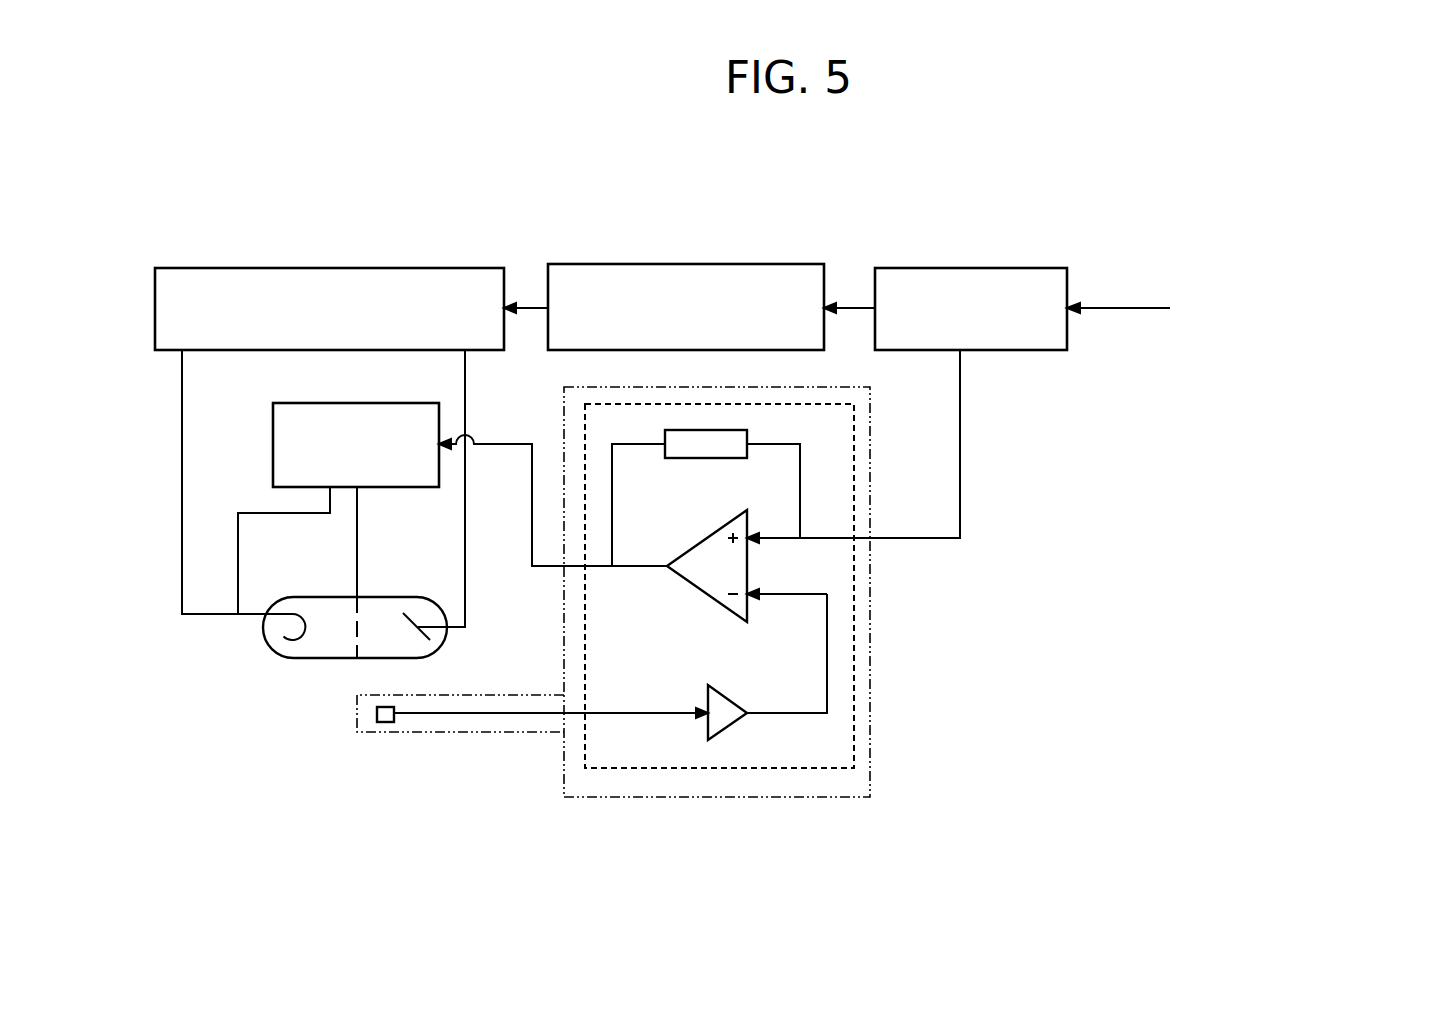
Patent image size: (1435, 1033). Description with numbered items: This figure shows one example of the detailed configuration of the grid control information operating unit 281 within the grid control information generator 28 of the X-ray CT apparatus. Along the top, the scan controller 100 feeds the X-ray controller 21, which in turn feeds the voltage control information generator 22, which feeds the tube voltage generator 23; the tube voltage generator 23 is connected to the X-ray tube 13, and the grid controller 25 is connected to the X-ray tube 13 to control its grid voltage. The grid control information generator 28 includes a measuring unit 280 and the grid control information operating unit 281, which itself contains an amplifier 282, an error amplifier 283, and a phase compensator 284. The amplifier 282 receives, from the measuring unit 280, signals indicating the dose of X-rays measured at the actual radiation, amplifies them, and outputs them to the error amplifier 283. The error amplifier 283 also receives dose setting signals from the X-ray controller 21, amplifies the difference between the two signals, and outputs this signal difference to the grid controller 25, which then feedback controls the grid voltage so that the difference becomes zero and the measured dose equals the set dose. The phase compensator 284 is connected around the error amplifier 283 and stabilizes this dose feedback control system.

The tube voltage generator 23 is at (227, 267).
The voltage control information generator 22 is at (683, 264).
The X-ray controller 21 is at (953, 268).
The scan controller 100 is at (1290, 310).
The grid controller 25 is at (273, 428).
The X-ray tube 13 is at (302, 660).
The grid control information generator 28 is at (870, 613).
The grid control information operating unit 281 is at (855, 723).
The measuring unit 280 is at (387, 727).
The phase compensator 284 is at (708, 460).
The error amplifier 283 is at (697, 590).
The amplifier 282 is at (757, 672).